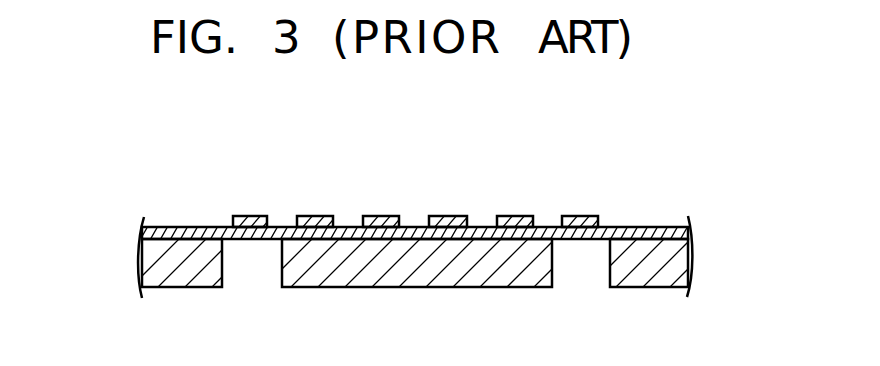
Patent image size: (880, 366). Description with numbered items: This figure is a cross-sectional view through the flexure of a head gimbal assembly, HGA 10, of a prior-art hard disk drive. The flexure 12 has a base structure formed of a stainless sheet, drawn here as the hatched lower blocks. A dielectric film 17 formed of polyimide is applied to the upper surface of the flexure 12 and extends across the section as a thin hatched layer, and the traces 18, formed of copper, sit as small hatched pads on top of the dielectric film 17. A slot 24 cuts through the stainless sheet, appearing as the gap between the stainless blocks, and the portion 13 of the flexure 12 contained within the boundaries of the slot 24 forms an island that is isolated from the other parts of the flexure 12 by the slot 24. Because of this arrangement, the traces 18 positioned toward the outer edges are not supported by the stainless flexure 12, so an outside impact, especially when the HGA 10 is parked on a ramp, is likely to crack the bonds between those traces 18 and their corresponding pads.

The HGA 10 is at (121, 186).
The flexure 12 is at (657, 270).
The portion of the flexure 13 is at (418, 280).
The dielectric film 17 is at (648, 228).
The traces 18 is at (502, 215).
The slot 24 is at (580, 270).